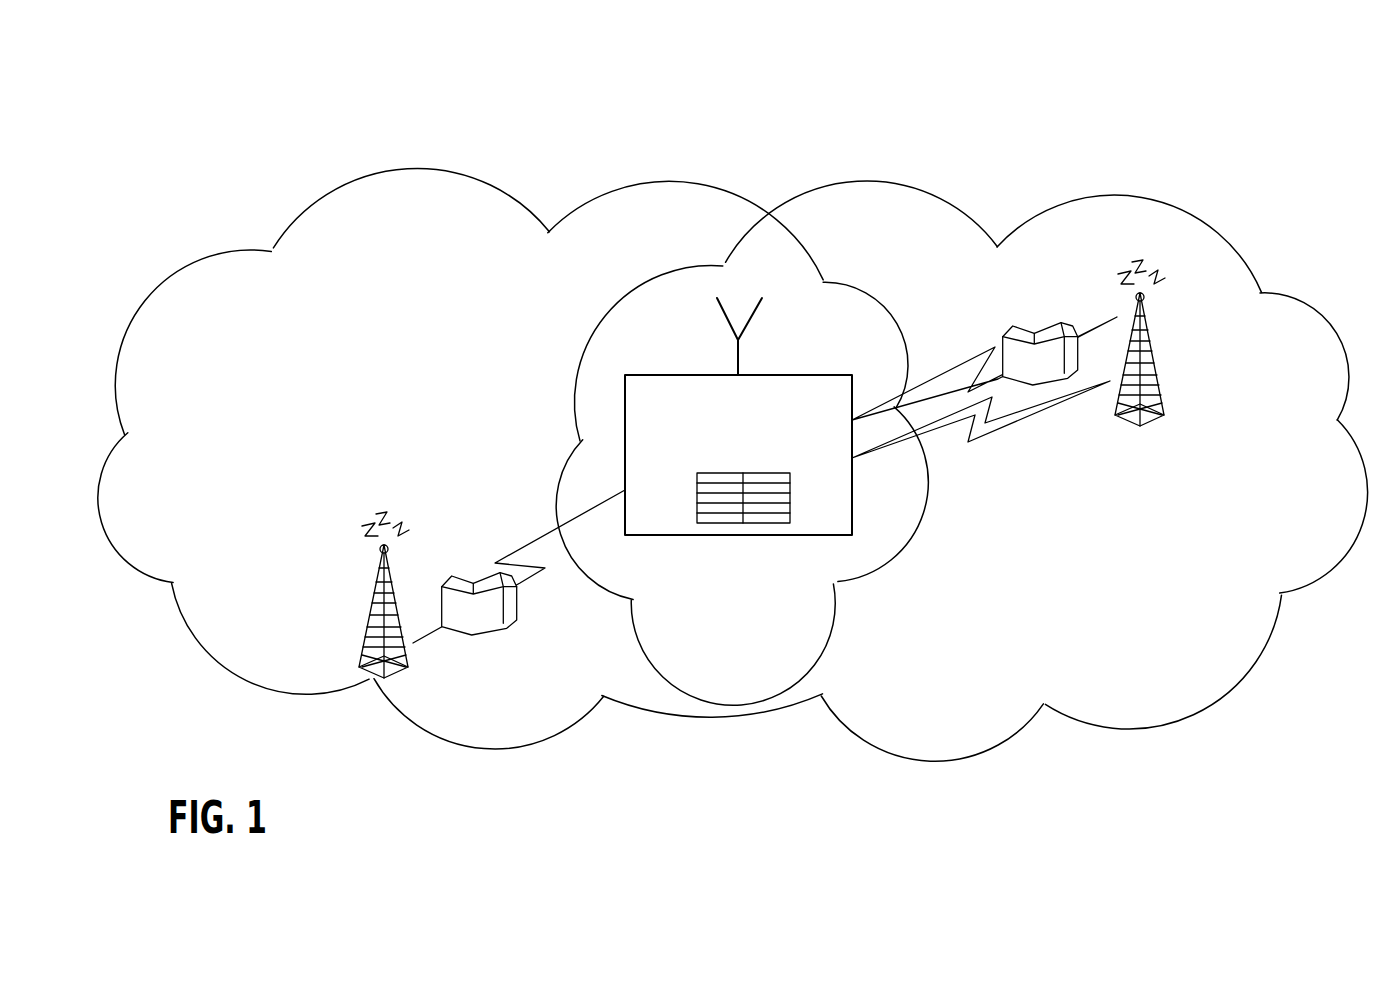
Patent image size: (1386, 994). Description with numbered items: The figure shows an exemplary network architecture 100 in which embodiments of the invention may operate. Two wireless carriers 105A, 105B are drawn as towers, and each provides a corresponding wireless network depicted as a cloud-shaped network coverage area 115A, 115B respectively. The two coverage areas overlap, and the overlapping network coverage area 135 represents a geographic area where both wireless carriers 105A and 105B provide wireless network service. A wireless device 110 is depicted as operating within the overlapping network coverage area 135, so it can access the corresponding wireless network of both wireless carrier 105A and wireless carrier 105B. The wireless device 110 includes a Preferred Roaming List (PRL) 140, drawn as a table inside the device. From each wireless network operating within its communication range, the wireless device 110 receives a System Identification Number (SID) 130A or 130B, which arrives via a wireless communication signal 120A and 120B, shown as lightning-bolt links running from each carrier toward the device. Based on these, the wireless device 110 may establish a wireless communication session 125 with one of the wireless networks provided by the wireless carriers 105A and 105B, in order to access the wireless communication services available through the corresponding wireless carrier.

The network architecture 100 is at (480, 102).
The wireless carrier 105A is at (407, 508).
The wireless carrier 105B is at (1163, 454).
The wireless device 110 is at (753, 444).
The network coverage area 115A is at (271, 247).
The network coverage area 115B is at (1180, 722).
The wireless communication signal 120A is at (540, 534).
The wireless communication signal 120B is at (968, 356).
The wireless communication session 125 is at (995, 472).
The System Identification Number (SID) 130A is at (495, 620).
The System Identification Number (SID) 130B is at (1040, 354).
The overlapping network coverage area 135 is at (868, 173).
The Preferred Roaming List (PRL) 140 is at (710, 525).